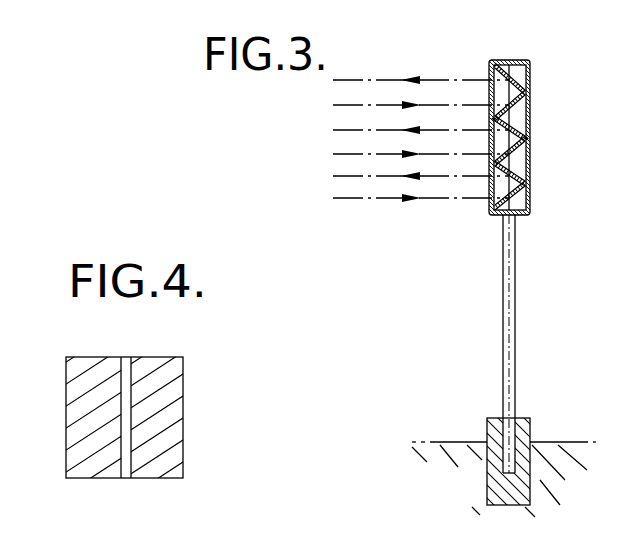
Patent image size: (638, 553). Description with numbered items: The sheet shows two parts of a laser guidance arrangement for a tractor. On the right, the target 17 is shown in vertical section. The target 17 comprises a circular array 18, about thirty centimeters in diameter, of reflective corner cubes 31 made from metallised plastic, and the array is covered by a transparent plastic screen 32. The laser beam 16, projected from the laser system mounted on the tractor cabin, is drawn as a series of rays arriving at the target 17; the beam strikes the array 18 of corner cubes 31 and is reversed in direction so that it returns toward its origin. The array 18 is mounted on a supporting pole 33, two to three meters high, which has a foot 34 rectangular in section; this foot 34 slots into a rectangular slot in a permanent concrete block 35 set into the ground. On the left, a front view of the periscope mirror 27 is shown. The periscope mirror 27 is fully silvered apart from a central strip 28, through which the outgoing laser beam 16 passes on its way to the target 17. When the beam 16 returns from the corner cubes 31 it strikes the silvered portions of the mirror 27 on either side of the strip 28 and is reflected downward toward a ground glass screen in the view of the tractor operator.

In FIG. 3, the laser beam 16 is at (457, 80).
In FIG. 3, the target 17 is at (511, 60).
In FIG. 3, the array of reflective corner cubes 18 is at (516, 122).
In FIG. 3, the reflective corner cubes 31 is at (512, 152).
In FIG. 3, the transparent plastic screen 32 is at (486, 205).
In FIG. 3, the supporting pole 33 is at (513, 347).
In FIG. 3, the foot 34 is at (502, 420).
In FIG. 3, the permanent concrete block 35 is at (522, 432).
In FIG. 4, the periscope mirror 27 is at (174, 370).
In FIG. 4, the central strip 28 is at (126, 360).